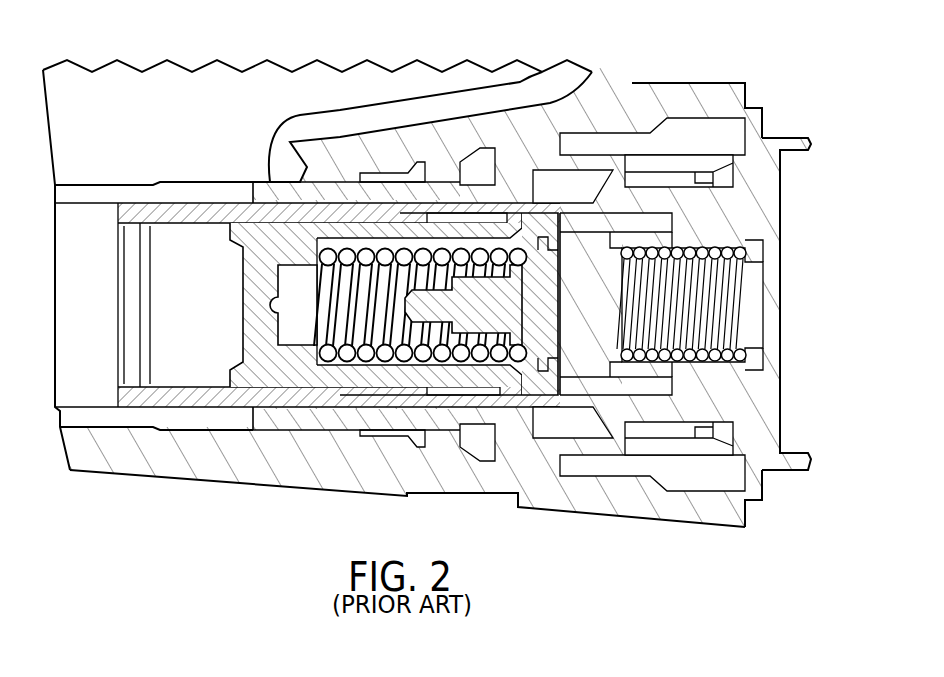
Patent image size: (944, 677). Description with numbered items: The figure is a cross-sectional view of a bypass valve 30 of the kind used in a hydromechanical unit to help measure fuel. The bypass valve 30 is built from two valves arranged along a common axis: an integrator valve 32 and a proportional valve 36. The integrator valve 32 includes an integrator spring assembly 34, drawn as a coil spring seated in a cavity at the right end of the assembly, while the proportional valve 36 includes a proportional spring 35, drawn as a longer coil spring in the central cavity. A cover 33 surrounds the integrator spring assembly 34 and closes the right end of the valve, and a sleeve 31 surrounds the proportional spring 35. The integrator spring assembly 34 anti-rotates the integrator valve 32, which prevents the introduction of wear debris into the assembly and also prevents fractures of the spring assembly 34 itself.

The bypass valve 30 is at (709, 557).
The sleeve 31 is at (445, 173).
The integrator valve 32 is at (680, 173).
The cover 33 is at (780, 248).
The integrator spring assembly 34 is at (730, 310).
The proportional spring 35 is at (503, 360).
The proportional valve 36 is at (298, 380).